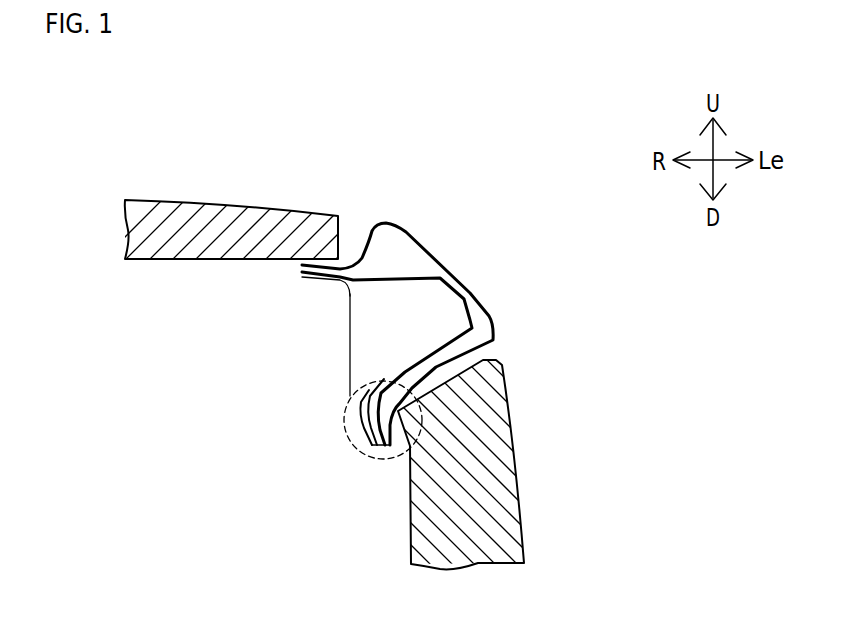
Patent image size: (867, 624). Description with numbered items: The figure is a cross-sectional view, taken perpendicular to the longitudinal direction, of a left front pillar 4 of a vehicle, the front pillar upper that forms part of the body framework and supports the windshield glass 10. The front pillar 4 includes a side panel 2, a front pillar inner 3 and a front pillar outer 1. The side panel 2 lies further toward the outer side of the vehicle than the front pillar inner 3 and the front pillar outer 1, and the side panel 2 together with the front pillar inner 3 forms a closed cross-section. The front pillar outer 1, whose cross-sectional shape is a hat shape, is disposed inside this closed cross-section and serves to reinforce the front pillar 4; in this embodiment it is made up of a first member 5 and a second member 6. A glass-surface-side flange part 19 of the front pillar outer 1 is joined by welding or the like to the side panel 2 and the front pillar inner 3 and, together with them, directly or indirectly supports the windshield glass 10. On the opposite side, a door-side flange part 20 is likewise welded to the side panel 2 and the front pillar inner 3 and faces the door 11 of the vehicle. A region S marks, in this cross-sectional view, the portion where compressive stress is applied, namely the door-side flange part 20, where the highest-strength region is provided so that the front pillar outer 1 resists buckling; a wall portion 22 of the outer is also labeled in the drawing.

The front pillar outer 1 is at (478, 328).
The side panel 2 is at (436, 252).
The front pillar inner 3 is at (349, 330).
The front pillar 4 is at (462, 206).
The first member 5 is at (368, 390).
The second member 6 is at (383, 379).
The windshield glass 10 is at (211, 212).
The door 11 is at (510, 484).
The glass-surface-side flange part 19 is at (311, 282).
The door-side flange part 20 is at (368, 428).
The hollow portion wall 22 is at (463, 298).
The region S is at (370, 459).